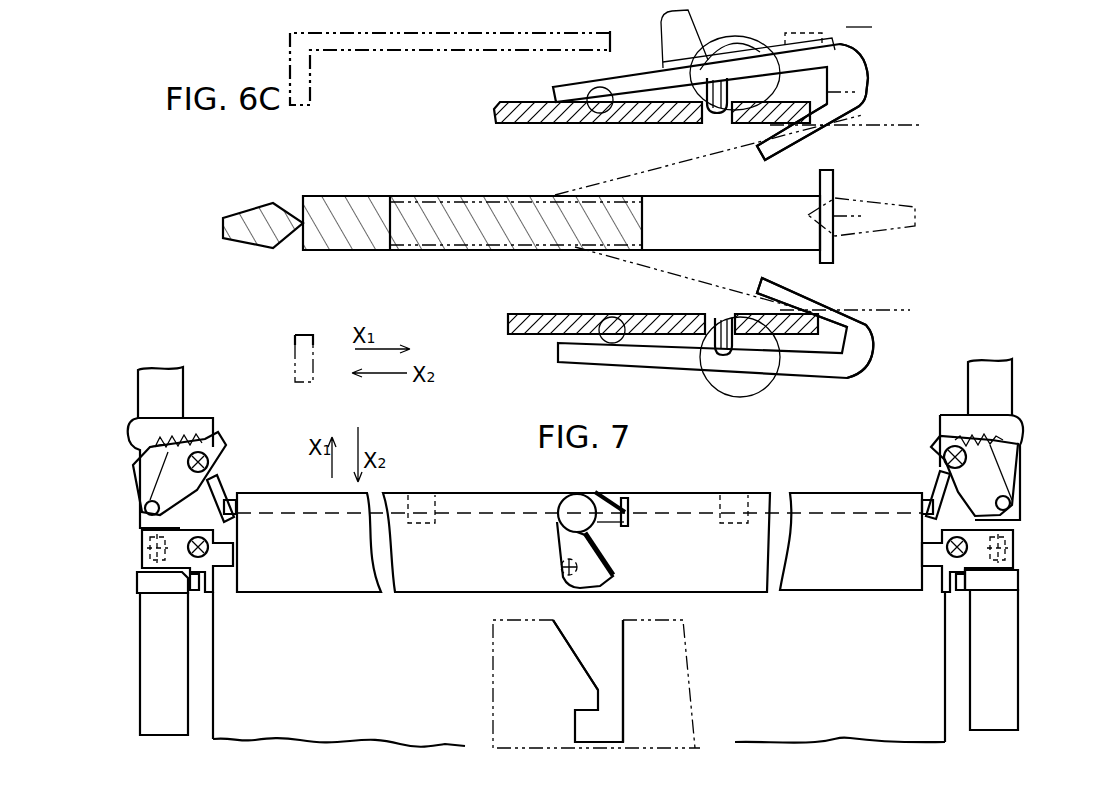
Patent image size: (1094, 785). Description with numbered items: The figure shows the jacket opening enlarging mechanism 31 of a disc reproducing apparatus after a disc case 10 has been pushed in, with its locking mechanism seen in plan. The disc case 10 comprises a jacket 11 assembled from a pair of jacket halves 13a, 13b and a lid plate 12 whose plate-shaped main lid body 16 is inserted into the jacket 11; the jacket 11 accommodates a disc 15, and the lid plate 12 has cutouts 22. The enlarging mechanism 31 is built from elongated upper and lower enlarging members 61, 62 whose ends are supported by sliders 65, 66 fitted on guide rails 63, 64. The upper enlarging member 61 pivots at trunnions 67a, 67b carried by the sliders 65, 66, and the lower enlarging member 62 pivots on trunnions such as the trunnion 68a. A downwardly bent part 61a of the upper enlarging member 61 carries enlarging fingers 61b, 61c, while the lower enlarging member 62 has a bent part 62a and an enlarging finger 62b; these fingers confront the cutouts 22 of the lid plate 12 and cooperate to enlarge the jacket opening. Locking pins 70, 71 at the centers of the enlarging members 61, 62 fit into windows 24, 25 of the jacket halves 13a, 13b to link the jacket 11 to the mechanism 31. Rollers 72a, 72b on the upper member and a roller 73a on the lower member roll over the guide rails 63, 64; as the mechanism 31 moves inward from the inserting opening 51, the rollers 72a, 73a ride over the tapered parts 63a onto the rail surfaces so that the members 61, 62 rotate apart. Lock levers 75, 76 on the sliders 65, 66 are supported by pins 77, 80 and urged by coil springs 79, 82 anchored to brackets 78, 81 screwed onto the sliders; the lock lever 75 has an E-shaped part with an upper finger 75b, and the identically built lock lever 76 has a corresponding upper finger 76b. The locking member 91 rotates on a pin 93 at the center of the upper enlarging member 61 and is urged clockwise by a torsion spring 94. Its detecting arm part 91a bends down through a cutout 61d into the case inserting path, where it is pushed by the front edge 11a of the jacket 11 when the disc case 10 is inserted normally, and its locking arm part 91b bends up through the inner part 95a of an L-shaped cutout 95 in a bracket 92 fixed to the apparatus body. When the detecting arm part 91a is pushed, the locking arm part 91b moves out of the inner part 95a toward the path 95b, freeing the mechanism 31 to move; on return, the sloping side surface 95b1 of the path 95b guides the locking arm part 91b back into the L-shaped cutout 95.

In FIG. 7, the disc case 10 is at (956, 730).
In FIG. 6C, the jacket 11 is at (492, 96).
In FIG. 6C, the front edge of the jacket 11a is at (840, 112).
In FIG. 7, the front edge of the jacket 11a is at (458, 500).
In FIG. 6C, the lid plate 12 is at (845, 190).
In FIG. 6C, the jacket half 13a is at (532, 102).
In FIG. 6C, the jacket half 13b is at (531, 336).
In FIG. 6C, the disc 15 is at (258, 206).
In FIG. 6C, the main lid body 16 is at (355, 200).
In FIG. 6C, the cutouts 22 is at (692, 240).
In FIG. 6C, the window 24 is at (710, 118).
In FIG. 7, the window 24 is at (569, 578).
In FIG. 6C, the window 25 is at (712, 316).
In FIG. 6C, the jacket opening enlarging mechanism 31 is at (860, 15).
In FIG. 6C, the inserting opening 51 is at (305, 296).
In FIG. 6C, the upper enlarging member 61 is at (710, 101).
In FIG. 7, the upper enlarging member 61 is at (836, 592).
In FIG. 6C, the downwardly bent part 61a is at (855, 74).
In FIG. 6C, the enlarging finger 61b is at (793, 150).
In FIG. 7, the enlarging finger 61b is at (420, 524).
In FIG. 7, the enlarging finger 61c is at (729, 524).
In FIG. 7, the cutout 61d is at (628, 523).
In FIG. 6C, the lower enlarging member 62 is at (680, 370).
In FIG. 6C, the bent part 62a is at (864, 360).
In FIG. 6C, the enlarging finger 62b is at (782, 287).
In FIG. 6C, the guide rail 63 is at (868, 122).
In FIG. 7, the guide rail 63 is at (143, 660).
In FIG. 6C, the tapered parts 63a is at (628, 164).
In FIG. 7, the guide rail 64 is at (1018, 658).
In FIG. 7, the slider 65 is at (140, 583).
In FIG. 7, the slider 66 is at (1016, 585).
In FIG. 6C, the trunnion 67a is at (598, 90).
In FIG. 7, the trunnion 67a is at (189, 590).
In FIG. 7, the trunnion 67b is at (966, 590).
In FIG. 6C, the trunnion 68a is at (608, 343).
In FIG. 6C, the locking pin 70 is at (722, 118).
In FIG. 7, the locking pin 70 is at (560, 568).
In FIG. 6C, the locking pin 71 is at (722, 357).
In FIG. 6C, the roller 72a is at (765, 42).
In FIG. 7, the roller 72a is at (147, 549).
In FIG. 7, the roller 72b is at (1008, 548).
In FIG. 6C, the roller 73a is at (770, 392).
In FIG. 7, the lock lever 75 is at (218, 480).
In FIG. 7, the upper finger 75b is at (237, 508).
In FIG. 7, the lock lever 76 is at (938, 478).
In FIG. 7, the upper finger 76b is at (921, 508).
In FIG. 7, the pin 77 is at (144, 510).
In FIG. 7, the bracket 78 is at (160, 488).
In FIG. 7, the coil spring 79 is at (185, 440).
In FIG. 7, the pin 80 is at (1011, 508).
In FIG. 7, the bracket 81 is at (995, 478).
In FIG. 7, the coil spring 82 is at (968, 440).
In FIG. 6C, the locking member 91 is at (770, 45).
In FIG. 7, the locking member 91 is at (557, 545).
In FIG. 6C, the detecting arm part 91a is at (827, 92).
In FIG. 7, the detecting arm part 91a is at (600, 495).
In FIG. 6C, the locking arm part 91b is at (668, 32).
In FIG. 7, the locking arm part 91b is at (618, 568).
In FIG. 6C, the bracket 92 is at (289, 57).
In FIG. 7, the bracket 92 is at (685, 683).
In FIG. 6C, the pin 93 is at (805, 40).
In FIG. 7, the pin 93 is at (562, 497).
In FIG. 7, the torsion spring 94 is at (624, 498).
In FIG. 7, the L-shaped cutout 95 is at (618, 681).
In FIG. 7, the inner part 95a is at (588, 725).
In FIG. 7, the path 95b is at (606, 664).
In FIG. 7, the side surface 95b1 is at (574, 642).